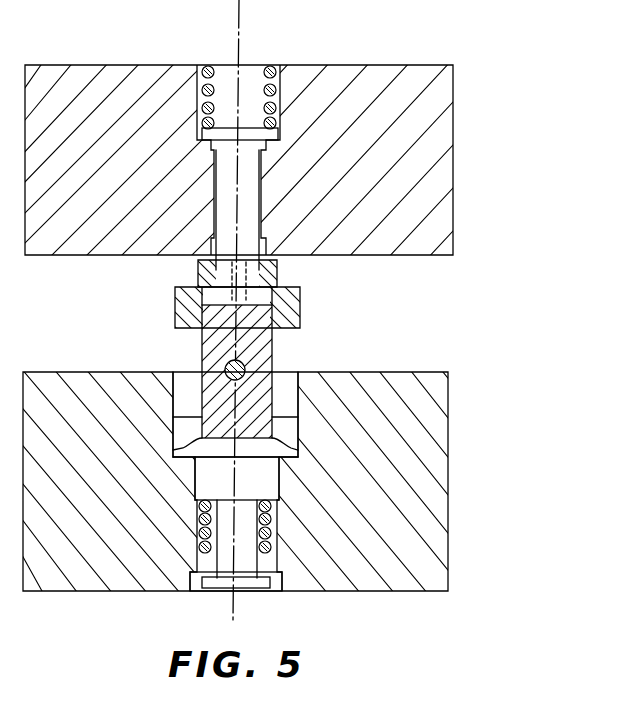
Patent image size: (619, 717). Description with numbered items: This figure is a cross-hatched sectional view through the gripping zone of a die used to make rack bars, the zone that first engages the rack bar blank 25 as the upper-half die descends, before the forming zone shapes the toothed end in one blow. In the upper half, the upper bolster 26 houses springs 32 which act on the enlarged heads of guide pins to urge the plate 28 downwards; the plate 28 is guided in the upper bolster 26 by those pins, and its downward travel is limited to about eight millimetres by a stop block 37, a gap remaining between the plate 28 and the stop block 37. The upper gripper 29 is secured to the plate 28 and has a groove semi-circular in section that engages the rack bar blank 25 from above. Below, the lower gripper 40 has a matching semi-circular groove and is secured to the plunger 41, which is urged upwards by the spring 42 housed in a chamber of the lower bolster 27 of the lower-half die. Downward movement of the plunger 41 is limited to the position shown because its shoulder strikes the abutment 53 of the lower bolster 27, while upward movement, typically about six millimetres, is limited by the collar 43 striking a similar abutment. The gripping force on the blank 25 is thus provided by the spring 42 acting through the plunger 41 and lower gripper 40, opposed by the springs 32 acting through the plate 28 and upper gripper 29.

The upper bolster 26 is at (448, 124).
The springs 32 is at (270, 65).
The stop block 37 is at (200, 267).
The plate 28 is at (302, 294).
The upper gripper 29 is at (273, 340).
The rack bar blank 25 is at (248, 369).
The lower gripper 40 is at (210, 385).
The plunger 41 is at (282, 440).
The abutment 53 is at (292, 460).
The lower bolster 27 is at (438, 503).
The spring 42 is at (272, 523).
The collar 43 is at (265, 580).